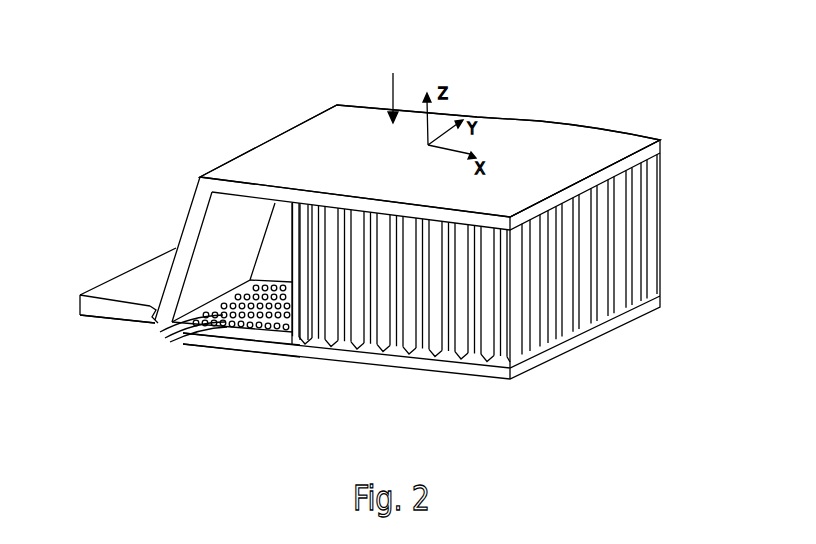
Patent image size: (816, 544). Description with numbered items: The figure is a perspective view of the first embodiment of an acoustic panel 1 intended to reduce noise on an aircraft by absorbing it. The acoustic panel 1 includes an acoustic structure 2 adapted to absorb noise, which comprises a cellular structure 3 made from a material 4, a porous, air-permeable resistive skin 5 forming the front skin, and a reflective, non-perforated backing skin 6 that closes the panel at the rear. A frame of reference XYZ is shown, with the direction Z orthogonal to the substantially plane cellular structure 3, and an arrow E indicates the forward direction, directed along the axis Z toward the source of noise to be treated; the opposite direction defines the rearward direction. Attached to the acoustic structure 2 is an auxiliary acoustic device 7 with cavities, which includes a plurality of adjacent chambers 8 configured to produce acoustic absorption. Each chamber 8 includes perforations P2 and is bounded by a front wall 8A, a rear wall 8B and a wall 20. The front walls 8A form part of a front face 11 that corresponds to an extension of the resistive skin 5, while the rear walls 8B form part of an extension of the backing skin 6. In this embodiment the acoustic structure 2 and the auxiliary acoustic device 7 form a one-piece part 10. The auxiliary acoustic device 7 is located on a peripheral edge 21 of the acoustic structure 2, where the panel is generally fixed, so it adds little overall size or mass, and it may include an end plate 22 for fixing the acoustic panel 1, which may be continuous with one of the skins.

The acoustic panel 1 is at (270, 106).
The acoustic structure 2 is at (643, 121).
The cellular structure 3 is at (617, 215).
The material 4 is at (613, 253).
The resistive skin 5 is at (353, 352).
The backing skin 6 is at (588, 183).
The auxiliary acoustic device 7 is at (221, 234).
The chambers 8 is at (155, 325).
The front walls 8A is at (269, 340).
The rear walls 8B is at (274, 204).
The one-piece part 10 is at (239, 353).
The front face 11 is at (193, 341).
The wall 20 is at (160, 271).
The peripheral edge 21 is at (286, 358).
The end plate 22 is at (80, 313).
The perforations P2 is at (167, 330).
The arrow E is at (391, 100).